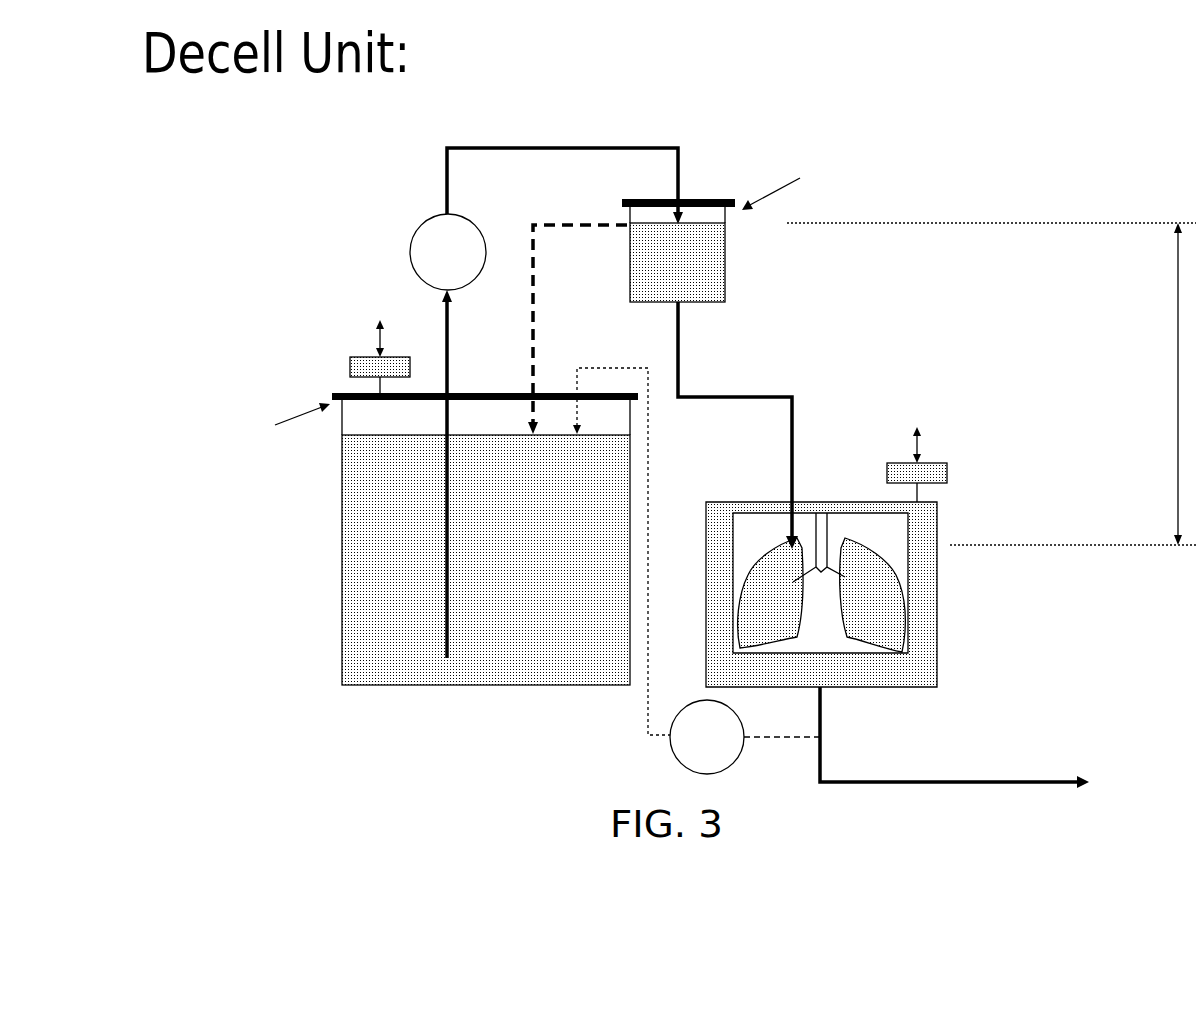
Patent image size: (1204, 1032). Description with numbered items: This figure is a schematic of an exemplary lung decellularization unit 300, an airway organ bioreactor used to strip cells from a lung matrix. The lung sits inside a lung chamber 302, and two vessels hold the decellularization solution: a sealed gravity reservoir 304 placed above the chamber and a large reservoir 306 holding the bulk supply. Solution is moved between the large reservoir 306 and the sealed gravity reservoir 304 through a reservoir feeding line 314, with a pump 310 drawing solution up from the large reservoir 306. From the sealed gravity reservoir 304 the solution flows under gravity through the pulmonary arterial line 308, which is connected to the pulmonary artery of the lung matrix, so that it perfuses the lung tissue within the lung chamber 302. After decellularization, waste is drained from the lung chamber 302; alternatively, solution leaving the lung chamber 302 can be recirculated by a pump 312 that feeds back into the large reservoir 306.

The decellularization unit 300 is at (1070, 91).
The lung chamber 302 is at (937, 608).
The sealed gravity reservoir 304 is at (725, 232).
The large reservoir 306 is at (342, 588).
The pulmonary arterial line 308 is at (793, 412).
The pump 310 is at (412, 229).
The pump 312 is at (671, 744).
The reservoir feeding line 314 is at (447, 154).